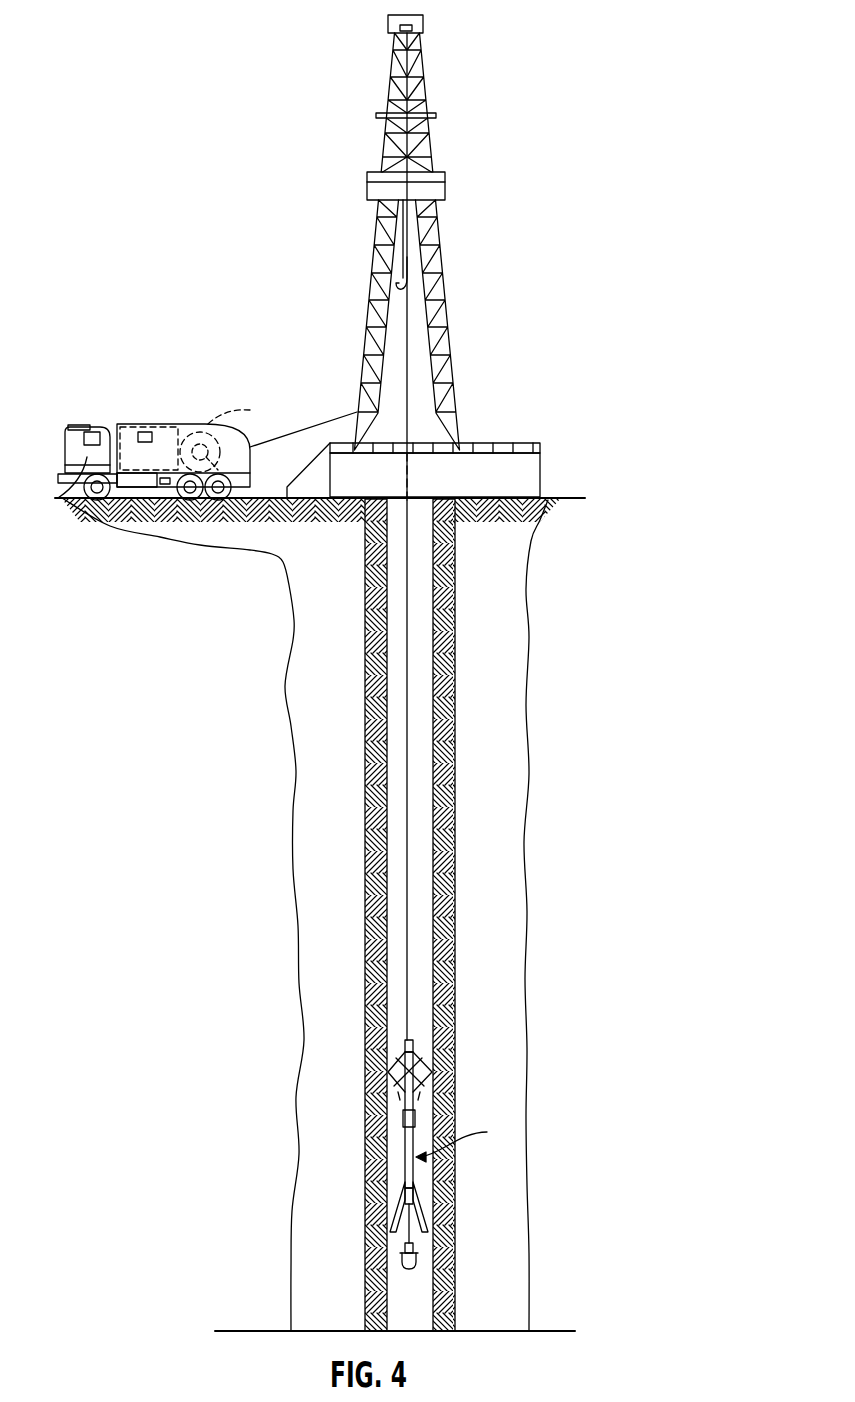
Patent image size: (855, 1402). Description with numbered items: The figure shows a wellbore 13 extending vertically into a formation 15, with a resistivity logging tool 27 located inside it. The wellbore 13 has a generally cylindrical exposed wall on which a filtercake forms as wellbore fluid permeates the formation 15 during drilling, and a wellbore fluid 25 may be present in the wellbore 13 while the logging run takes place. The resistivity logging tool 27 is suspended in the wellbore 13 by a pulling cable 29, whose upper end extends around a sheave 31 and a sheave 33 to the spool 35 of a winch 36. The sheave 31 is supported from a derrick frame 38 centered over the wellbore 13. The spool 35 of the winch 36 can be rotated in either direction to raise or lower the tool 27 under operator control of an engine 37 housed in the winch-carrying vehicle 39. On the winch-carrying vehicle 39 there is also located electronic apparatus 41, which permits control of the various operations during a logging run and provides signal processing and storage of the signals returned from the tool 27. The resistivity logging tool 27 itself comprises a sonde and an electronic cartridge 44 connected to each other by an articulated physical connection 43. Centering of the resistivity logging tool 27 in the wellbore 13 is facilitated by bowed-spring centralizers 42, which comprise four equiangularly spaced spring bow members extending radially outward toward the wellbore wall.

The wellbore 13 is at (400, 763).
The formation 15 is at (320, 718).
The wellbore fluid 25 is at (415, 1296).
The resistivity logging tool 27 is at (462, 1114).
The pulling cable 29 is at (407, 612).
The sheave 31 is at (403, 328).
The sheave 33 is at (358, 412).
The spool 35 is at (245, 410).
The winch 36 is at (188, 425).
The engine 37 is at (58, 498).
The derrick frame 38 is at (380, 148).
The winch-carrying vehicle 39 is at (90, 428).
The electronic apparatus 41 is at (126, 432).
The bowed-spring centralizers 42 is at (390, 1058).
The articulated physical connection 43 is at (415, 1117).
The electronic cartridge 44 is at (408, 1070).